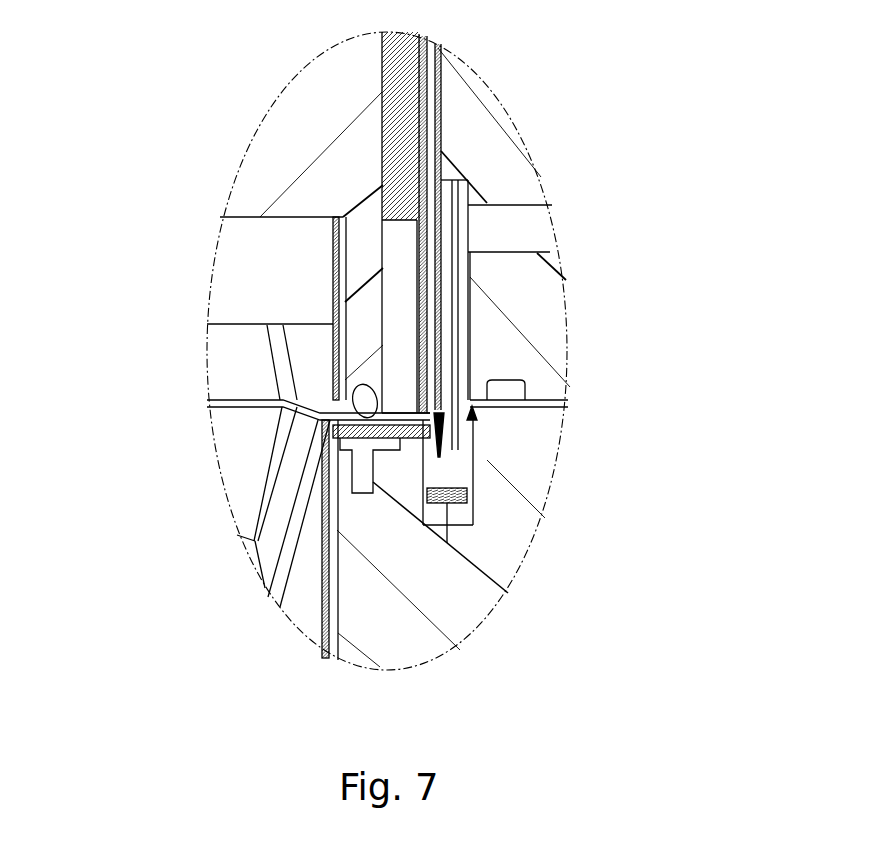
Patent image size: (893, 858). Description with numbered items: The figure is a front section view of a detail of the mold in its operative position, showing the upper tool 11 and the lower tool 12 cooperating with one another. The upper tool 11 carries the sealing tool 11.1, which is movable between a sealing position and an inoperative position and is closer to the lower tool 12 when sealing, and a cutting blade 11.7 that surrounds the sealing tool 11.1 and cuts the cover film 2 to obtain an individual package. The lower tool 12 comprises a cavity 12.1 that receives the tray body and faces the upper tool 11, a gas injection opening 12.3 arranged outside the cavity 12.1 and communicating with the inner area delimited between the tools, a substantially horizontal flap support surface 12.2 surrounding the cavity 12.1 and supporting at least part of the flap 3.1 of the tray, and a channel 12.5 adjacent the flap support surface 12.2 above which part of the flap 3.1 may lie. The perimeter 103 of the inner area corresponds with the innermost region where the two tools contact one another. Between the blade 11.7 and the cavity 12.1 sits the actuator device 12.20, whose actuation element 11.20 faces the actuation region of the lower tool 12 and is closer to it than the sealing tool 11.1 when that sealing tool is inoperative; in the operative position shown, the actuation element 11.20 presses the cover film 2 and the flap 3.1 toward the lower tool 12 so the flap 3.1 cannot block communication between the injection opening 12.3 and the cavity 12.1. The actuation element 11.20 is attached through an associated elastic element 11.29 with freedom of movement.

The cover film 2 is at (240, 363).
The flap 3.1 is at (377, 407).
The upper tool 11 is at (541, 312).
The sealing tool 11.1 is at (300, 120).
The cutting blade 11.7 is at (447, 260).
The actuation element 11.20 is at (400, 242).
The elastic element 11.29 is at (400, 145).
The lower tool 12 is at (540, 488).
The cavity 12.1 is at (303, 570).
The flap support surface 12.2 is at (388, 447).
The gas injection opening 12.3 is at (445, 541).
The channel 12.5 is at (445, 472).
The actuator device 12.20 is at (364, 324).
The perimeter 103 is at (473, 420).